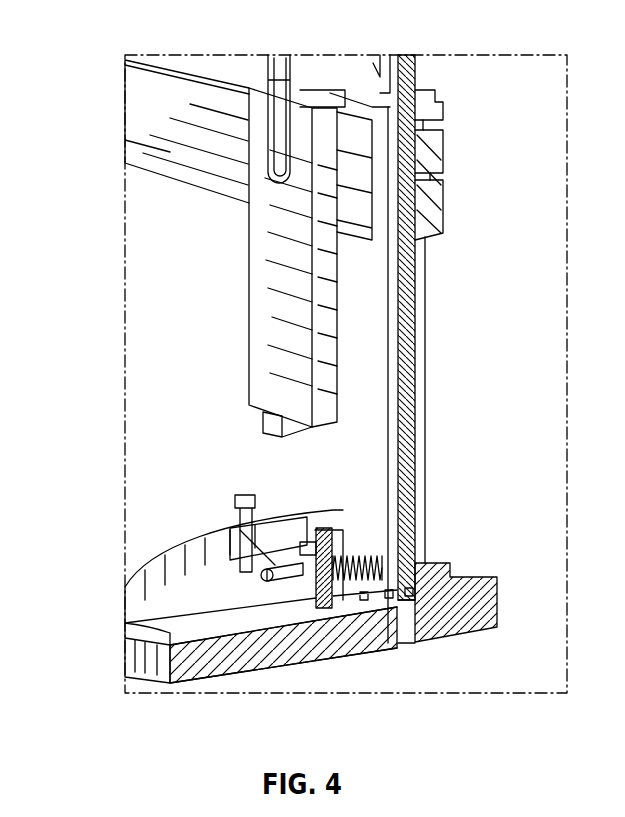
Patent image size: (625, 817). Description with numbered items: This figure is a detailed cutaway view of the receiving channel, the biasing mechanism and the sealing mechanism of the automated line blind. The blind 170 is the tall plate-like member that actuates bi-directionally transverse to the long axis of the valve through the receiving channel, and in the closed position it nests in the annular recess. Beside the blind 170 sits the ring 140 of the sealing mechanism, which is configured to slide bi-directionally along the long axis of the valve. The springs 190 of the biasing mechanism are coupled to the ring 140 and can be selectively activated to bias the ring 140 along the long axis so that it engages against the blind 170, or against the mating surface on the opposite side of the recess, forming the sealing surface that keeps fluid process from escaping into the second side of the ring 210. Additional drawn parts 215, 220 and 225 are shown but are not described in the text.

The ring 140 is at (345, 538).
The blind 170 is at (407, 313).
The springs 190 is at (355, 570).
The second side of the ring 210 is at (152, 118).
The hanging member 215 is at (385, 150).
The bracket 220 is at (435, 173).
The fasteners 225 is at (360, 545).